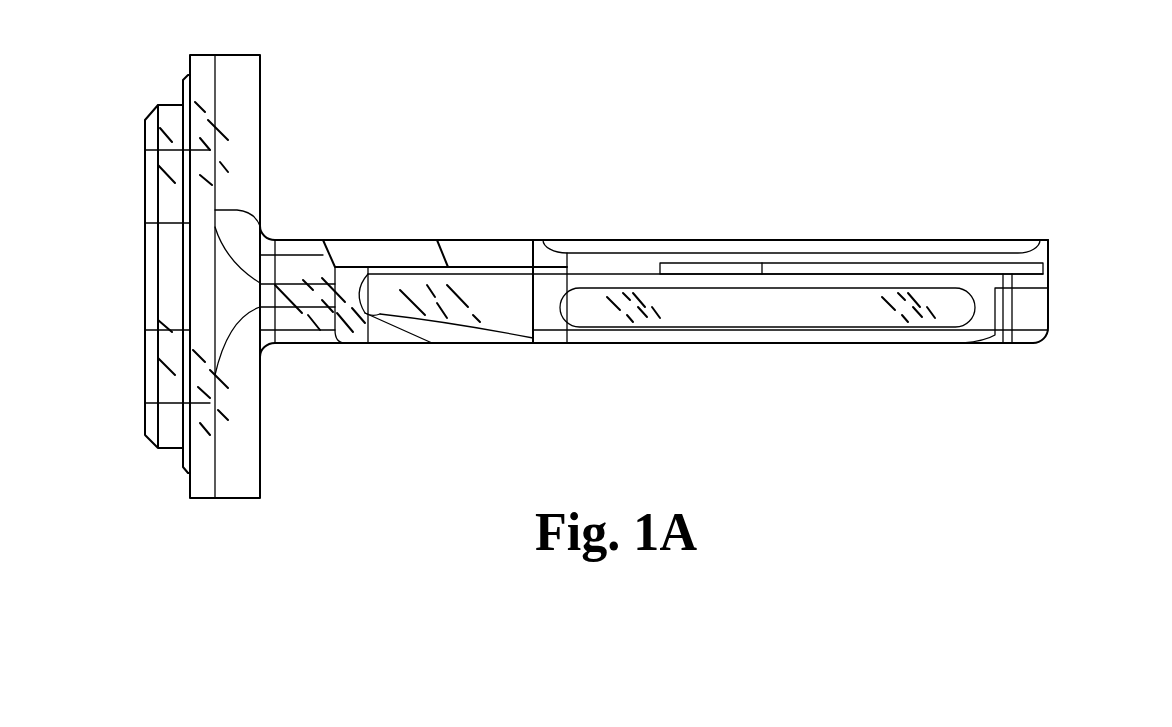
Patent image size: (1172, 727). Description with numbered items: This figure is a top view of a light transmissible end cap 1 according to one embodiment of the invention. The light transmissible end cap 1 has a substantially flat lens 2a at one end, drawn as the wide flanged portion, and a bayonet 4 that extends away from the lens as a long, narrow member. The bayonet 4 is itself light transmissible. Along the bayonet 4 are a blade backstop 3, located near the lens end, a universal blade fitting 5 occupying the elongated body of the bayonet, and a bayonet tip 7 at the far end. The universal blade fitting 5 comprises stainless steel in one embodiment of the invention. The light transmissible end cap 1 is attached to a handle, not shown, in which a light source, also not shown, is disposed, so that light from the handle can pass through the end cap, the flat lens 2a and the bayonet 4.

The light transmissible end cap 1 is at (152, 145).
The substantially flat lens 2a is at (242, 143).
The blade backstop 3 is at (402, 247).
The bayonet 4 is at (453, 322).
The universal blade fitting 5 is at (782, 280).
The bayonet tip 7 is at (1048, 308).